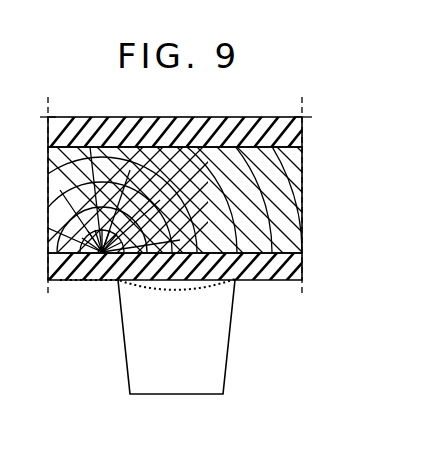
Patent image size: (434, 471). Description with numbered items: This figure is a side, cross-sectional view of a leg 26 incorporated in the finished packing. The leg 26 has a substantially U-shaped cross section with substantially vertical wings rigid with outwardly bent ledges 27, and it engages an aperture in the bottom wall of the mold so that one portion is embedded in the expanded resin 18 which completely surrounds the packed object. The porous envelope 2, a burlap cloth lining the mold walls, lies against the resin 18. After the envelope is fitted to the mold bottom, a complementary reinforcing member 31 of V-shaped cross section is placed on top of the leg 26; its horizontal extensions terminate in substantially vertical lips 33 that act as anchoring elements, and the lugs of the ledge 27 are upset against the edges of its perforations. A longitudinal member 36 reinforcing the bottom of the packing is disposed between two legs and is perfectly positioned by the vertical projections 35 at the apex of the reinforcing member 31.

The porous envelope 2 is at (48, 265).
The resin 18 is at (78, 122).
The leg 26 is at (124, 339).
The ledge 27 is at (268, 282).
The reinforcing member 31 is at (207, 281).
The vertical lip 33 is at (290, 282).
The vertical projection 35 is at (178, 286).
The longitudinal member 36 is at (233, 127).